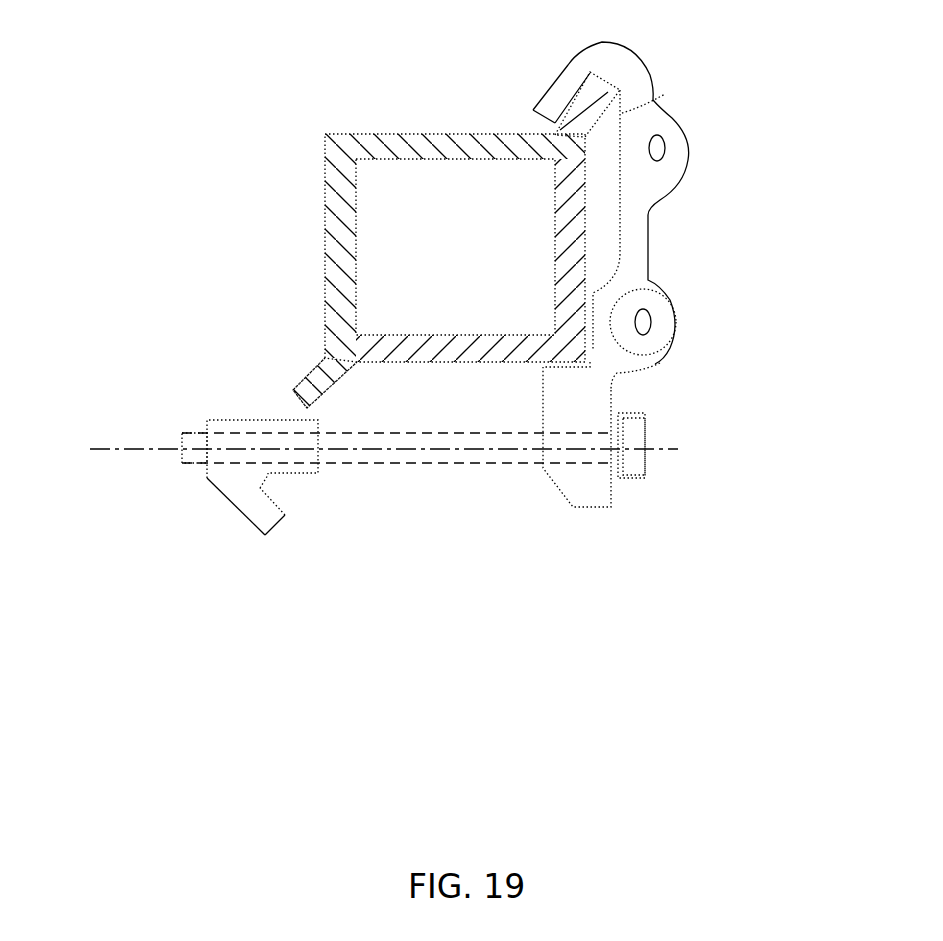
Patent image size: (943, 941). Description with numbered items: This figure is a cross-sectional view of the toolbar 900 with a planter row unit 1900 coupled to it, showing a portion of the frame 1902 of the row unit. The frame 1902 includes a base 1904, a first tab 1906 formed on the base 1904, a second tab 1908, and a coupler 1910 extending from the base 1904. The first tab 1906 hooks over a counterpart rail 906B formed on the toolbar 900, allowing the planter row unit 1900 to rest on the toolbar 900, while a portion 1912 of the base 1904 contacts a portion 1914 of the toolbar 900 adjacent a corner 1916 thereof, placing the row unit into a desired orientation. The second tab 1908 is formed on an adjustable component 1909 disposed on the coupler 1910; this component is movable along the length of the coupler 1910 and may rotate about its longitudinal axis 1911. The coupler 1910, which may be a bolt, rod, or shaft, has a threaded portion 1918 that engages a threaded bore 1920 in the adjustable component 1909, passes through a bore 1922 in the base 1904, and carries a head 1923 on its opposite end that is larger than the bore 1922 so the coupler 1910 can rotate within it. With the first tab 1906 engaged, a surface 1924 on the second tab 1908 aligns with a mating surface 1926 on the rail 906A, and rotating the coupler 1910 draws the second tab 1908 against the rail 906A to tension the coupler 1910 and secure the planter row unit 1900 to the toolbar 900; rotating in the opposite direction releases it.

The toolbar 900 is at (350, 134).
The portion of the toolbar 1914 is at (560, 297).
The rail 906A is at (302, 366).
The mating surface 1926 is at (302, 366).
The first tab 1906 is at (553, 80).
The rail 906B is at (653, 104).
The frame 1902 is at (643, 220).
The base 1904 is at (643, 220).
The portion of the base 1912 is at (655, 291).
The planter row unit 1900 is at (660, 363).
The corner 1916 is at (585, 350).
The bore 1922 is at (573, 457).
The head 1923 is at (647, 475).
The coupler 1910 is at (442, 466).
The longitudinal axis 1911 is at (100, 462).
The threaded portion 1918 is at (228, 443).
The adjustable component 1909 is at (213, 497).
The second tab 1908 is at (237, 512).
The threaded bore 1920 is at (288, 457).
The surface 1924 is at (287, 507).